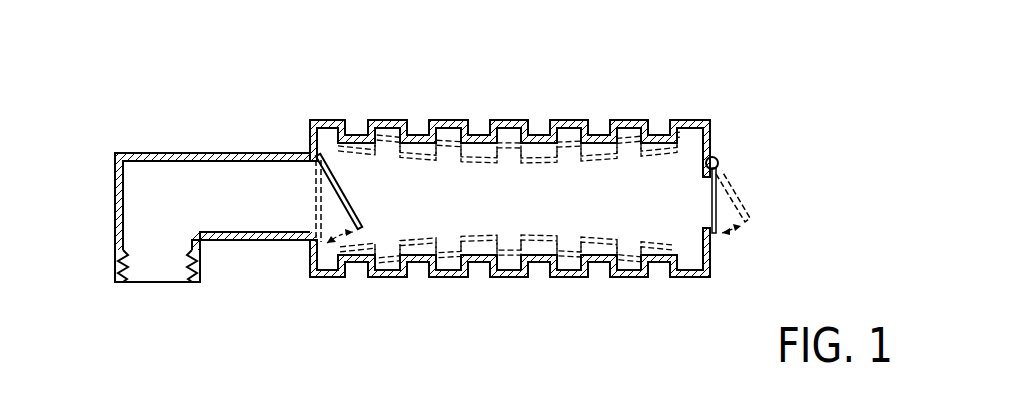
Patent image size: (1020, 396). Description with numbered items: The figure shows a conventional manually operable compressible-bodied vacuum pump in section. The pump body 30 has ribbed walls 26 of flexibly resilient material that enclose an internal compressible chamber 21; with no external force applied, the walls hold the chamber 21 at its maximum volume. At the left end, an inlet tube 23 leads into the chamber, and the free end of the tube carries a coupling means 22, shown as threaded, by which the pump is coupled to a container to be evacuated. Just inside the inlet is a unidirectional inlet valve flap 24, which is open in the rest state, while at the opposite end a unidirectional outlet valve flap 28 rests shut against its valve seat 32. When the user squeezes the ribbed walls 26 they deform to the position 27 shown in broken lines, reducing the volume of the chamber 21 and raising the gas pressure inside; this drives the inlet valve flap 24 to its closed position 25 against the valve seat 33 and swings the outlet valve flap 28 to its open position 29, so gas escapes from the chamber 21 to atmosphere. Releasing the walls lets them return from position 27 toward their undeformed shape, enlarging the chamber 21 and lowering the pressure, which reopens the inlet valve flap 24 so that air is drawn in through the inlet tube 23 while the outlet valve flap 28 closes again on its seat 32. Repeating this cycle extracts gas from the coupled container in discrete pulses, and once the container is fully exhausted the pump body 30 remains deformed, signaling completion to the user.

The internal compressible chamber 21 is at (450, 176).
The coupling means 22 is at (115, 265).
The inlet tube 23 is at (142, 155).
The unidirectional inlet valve flap 24 is at (335, 176).
The closed position of inlet valve flap 25 is at (317, 197).
The ribbed walls 26 is at (575, 119).
The deformed position of ribbed walls 27 is at (537, 143).
The unidirectional outlet valve flap 28 is at (723, 184).
The open position of outlet valve flap 29 is at (738, 202).
The pump body 30 is at (712, 153).
The outlet valve seat 32 is at (722, 234).
The inlet valve seat 33 is at (313, 239).